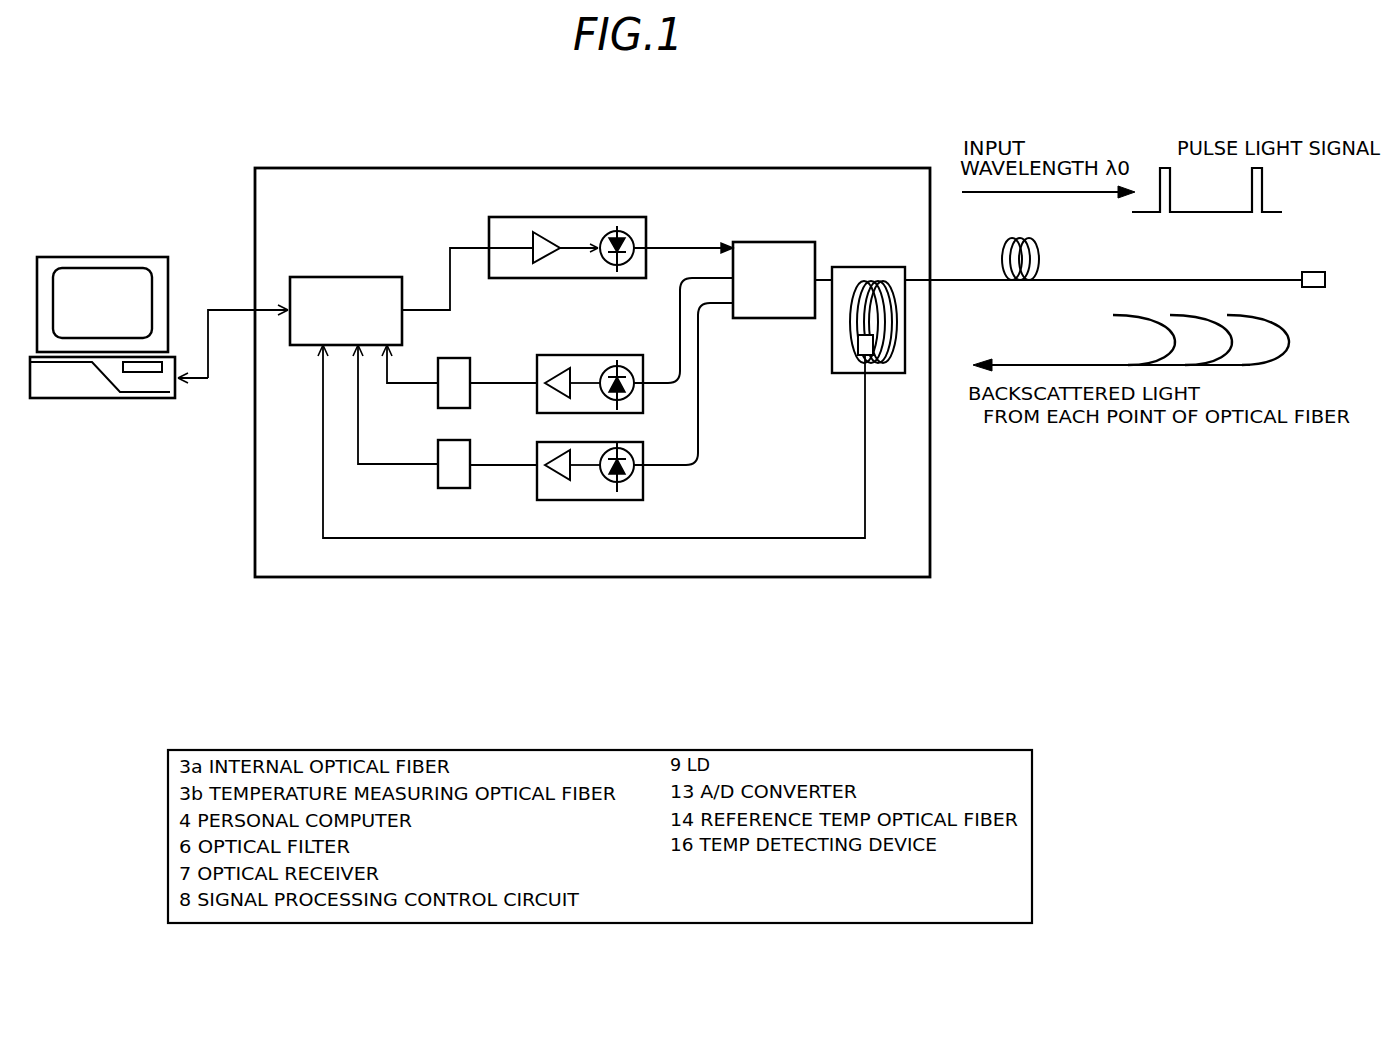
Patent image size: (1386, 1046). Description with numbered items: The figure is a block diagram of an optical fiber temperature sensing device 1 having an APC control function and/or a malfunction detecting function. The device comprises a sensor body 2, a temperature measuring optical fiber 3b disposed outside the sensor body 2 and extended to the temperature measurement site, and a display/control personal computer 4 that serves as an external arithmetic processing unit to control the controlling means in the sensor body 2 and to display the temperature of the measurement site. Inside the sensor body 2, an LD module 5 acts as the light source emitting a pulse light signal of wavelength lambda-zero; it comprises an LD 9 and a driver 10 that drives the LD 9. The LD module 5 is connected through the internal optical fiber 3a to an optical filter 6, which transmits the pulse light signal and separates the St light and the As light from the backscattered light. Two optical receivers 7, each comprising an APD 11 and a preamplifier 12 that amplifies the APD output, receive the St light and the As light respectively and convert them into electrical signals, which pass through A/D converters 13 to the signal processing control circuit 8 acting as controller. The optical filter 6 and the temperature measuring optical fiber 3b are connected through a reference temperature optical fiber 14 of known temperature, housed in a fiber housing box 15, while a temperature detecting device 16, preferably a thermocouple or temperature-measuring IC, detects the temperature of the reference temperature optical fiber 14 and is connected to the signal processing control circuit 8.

The optical fiber temperature sensing device 1 is at (823, 125).
The sensor body 2 is at (818, 577).
The internal optical fiber 3a is at (683, 246).
The temperature measuring optical fiber 3b is at (1040, 258).
The display/control personal computer 4 is at (135, 257).
The LD module 5 is at (567, 283).
The optical filter 6 is at (748, 320).
The optical receiver 7 is at (567, 421).
The signal processing control circuit 8 is at (330, 276).
The LD 9 is at (608, 263).
The driver 10 is at (533, 257).
The APD 11 is at (607, 405).
The preamplifier 12 is at (557, 395).
The A/D converter 13 is at (438, 390).
The reference temperature optical fiber 14 is at (848, 323).
The fiber housing box 15 is at (842, 319).
The temperature detecting device 16 is at (858, 355).